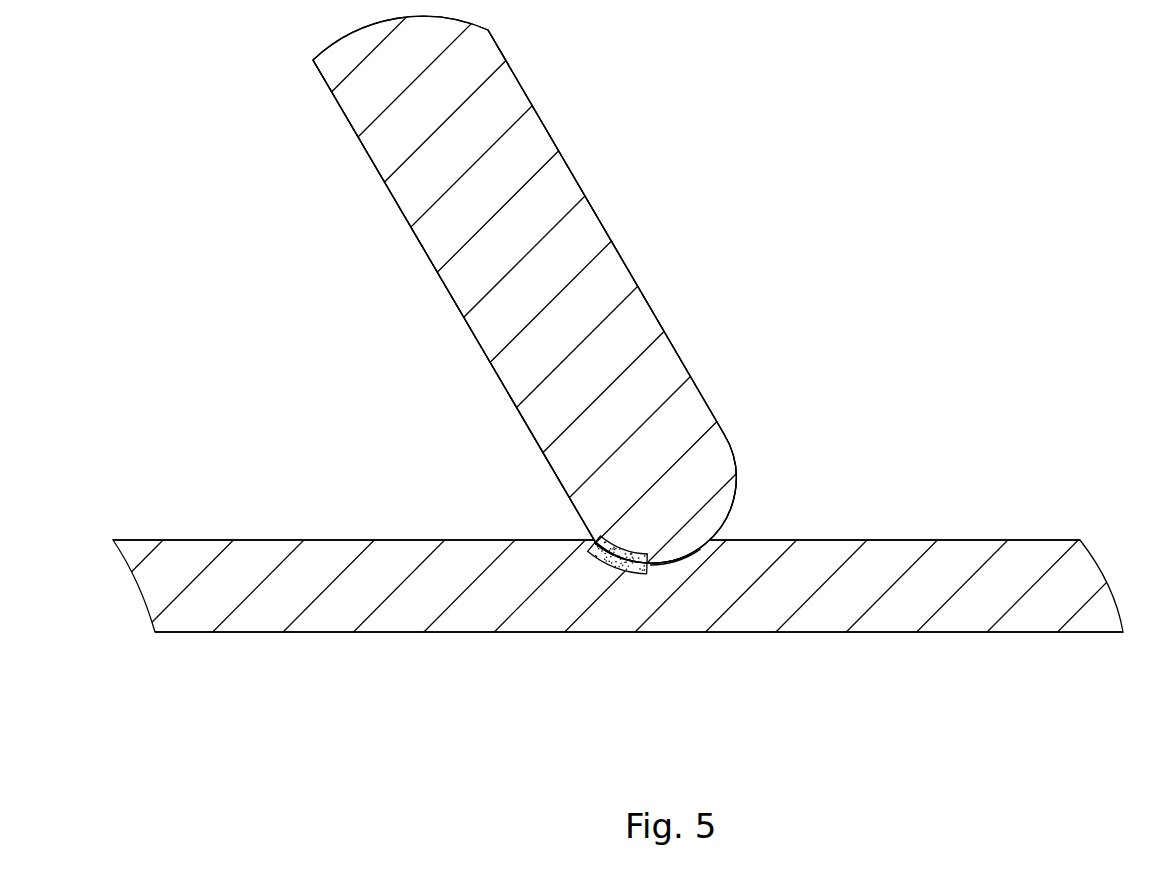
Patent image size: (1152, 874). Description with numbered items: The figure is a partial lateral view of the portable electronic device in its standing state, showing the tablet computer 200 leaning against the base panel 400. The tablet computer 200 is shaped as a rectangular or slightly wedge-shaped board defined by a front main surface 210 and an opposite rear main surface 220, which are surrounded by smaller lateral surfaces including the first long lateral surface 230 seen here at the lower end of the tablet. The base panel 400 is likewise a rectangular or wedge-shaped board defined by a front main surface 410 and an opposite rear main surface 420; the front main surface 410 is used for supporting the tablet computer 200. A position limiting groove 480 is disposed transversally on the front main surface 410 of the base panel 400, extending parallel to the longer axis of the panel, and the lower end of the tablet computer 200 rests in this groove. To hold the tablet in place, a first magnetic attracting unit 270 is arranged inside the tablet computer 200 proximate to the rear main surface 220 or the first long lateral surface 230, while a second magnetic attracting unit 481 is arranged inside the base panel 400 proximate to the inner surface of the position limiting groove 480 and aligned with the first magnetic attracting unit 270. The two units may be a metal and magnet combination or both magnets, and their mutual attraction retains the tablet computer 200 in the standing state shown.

The tablet computer 200 is at (588, 147).
The front main surface 210 is at (652, 308).
The rear main surface 220 is at (448, 297).
The first long lateral surface 230 is at (722, 525).
The first magnetic attracting unit 270 is at (648, 577).
The base panel 400 is at (391, 662).
The front main surface 410 is at (212, 539).
The rear main surface 420 is at (1008, 633).
The position limiting groove 480 is at (687, 562).
The second magnetic attracting unit 481 is at (613, 573).